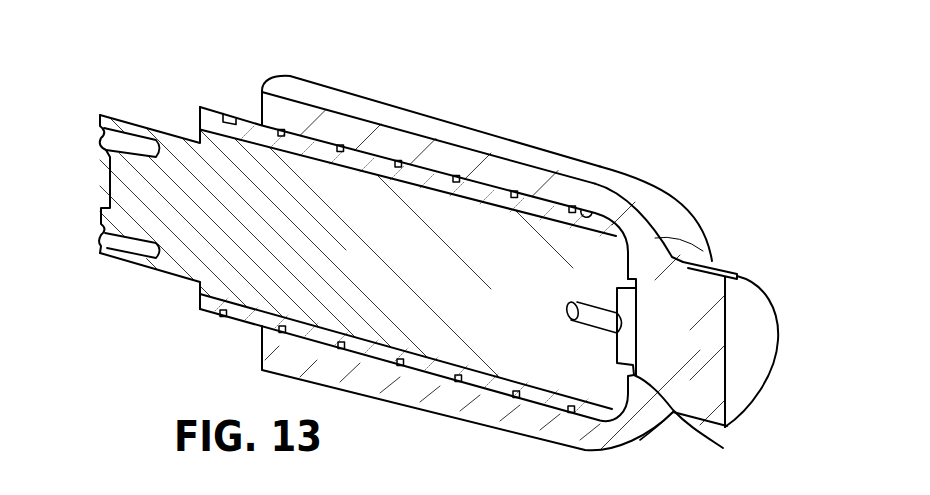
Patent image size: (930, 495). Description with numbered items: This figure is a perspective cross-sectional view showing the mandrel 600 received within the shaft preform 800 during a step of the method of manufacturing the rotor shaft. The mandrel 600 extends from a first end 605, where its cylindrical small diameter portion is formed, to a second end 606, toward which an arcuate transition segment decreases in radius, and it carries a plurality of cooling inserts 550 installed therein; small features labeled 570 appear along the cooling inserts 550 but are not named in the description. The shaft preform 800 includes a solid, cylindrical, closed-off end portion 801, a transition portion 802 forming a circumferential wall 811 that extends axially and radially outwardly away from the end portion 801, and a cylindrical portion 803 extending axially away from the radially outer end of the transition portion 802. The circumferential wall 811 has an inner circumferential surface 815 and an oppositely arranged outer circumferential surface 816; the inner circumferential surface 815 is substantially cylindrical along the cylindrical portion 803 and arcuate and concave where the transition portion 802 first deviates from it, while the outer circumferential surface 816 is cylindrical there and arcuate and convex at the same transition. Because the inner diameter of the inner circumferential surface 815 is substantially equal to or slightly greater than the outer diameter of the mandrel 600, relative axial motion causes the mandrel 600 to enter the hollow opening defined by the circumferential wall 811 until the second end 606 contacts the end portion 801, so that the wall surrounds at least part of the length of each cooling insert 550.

The mandrel 600 is at (166, 297).
The first end 605 is at (108, 190).
The cooling inserts 550 is at (308, 137).
The contact spring 570 is at (398, 160).
The shaft preform 800 is at (553, 252).
The end portion 801 is at (797, 277).
The transition portion 802 is at (660, 229).
The cylindrical portion 803 is at (462, 131).
The circumferential wall 811 is at (518, 177).
The inner circumferential surface 815 is at (589, 211).
The outer circumferential surface 816 is at (604, 190).
The second end 606 is at (723, 448).